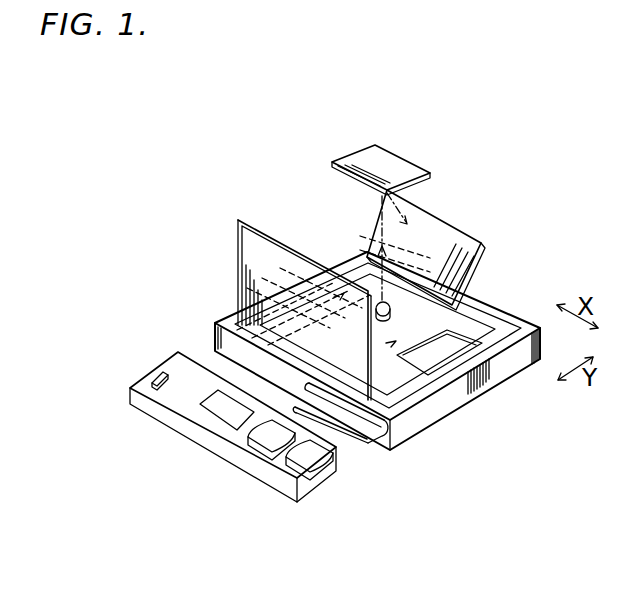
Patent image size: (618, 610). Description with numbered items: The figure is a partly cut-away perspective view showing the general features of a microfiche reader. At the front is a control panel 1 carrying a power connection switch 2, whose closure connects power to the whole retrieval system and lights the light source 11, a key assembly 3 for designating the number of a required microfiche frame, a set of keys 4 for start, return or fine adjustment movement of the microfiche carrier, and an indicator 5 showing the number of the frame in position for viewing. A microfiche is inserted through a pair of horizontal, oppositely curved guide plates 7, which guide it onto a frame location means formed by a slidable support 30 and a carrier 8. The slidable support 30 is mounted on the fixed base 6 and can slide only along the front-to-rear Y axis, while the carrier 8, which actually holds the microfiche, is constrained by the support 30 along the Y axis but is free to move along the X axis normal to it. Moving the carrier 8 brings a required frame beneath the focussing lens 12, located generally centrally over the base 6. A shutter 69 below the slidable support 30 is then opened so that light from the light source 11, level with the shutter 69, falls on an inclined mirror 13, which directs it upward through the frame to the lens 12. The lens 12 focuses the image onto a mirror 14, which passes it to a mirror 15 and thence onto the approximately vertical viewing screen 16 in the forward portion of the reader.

The control panel 1 is at (177, 397).
The power connection switch 2 is at (153, 376).
The key assembly 3 is at (268, 452).
The set of keys 4 is at (310, 458).
The indicator 5 is at (222, 415).
The fixed base 6 is at (452, 397).
The guide plates 7 is at (357, 438).
The carrier 8 is at (430, 329).
The light source 11 is at (237, 288).
The focussing lens 12 is at (430, 330).
The inclined mirror 13 is at (392, 360).
The mirror 14 is at (393, 149).
The mirror 15 is at (452, 237).
The viewing screen 16 is at (265, 245).
The slidable support 30 is at (483, 337).
The shutter 69 is at (250, 323).